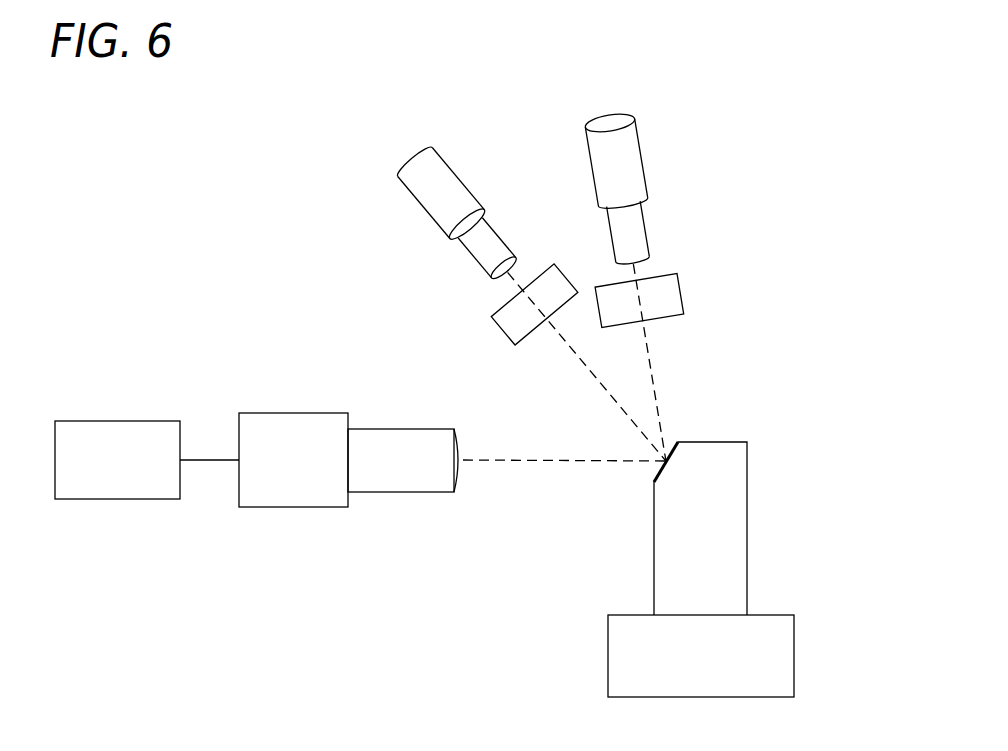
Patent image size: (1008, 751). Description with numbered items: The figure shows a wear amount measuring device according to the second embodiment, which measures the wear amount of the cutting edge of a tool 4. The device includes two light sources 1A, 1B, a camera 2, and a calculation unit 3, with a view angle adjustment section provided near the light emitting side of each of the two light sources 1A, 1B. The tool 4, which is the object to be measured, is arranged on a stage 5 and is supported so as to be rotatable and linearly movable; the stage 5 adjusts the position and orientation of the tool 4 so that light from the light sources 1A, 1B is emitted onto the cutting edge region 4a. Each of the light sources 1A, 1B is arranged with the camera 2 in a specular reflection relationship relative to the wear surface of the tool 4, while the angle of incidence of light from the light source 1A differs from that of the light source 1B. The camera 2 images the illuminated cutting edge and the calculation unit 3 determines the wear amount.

The light source 1A is at (422, 190).
The light source 1B is at (628, 162).
The camera 2 is at (290, 425).
The calculation unit 3 is at (63, 418).
The tool 4 is at (733, 528).
The processing point / machined surface 4a is at (672, 446).
The stage 5 is at (781, 667).